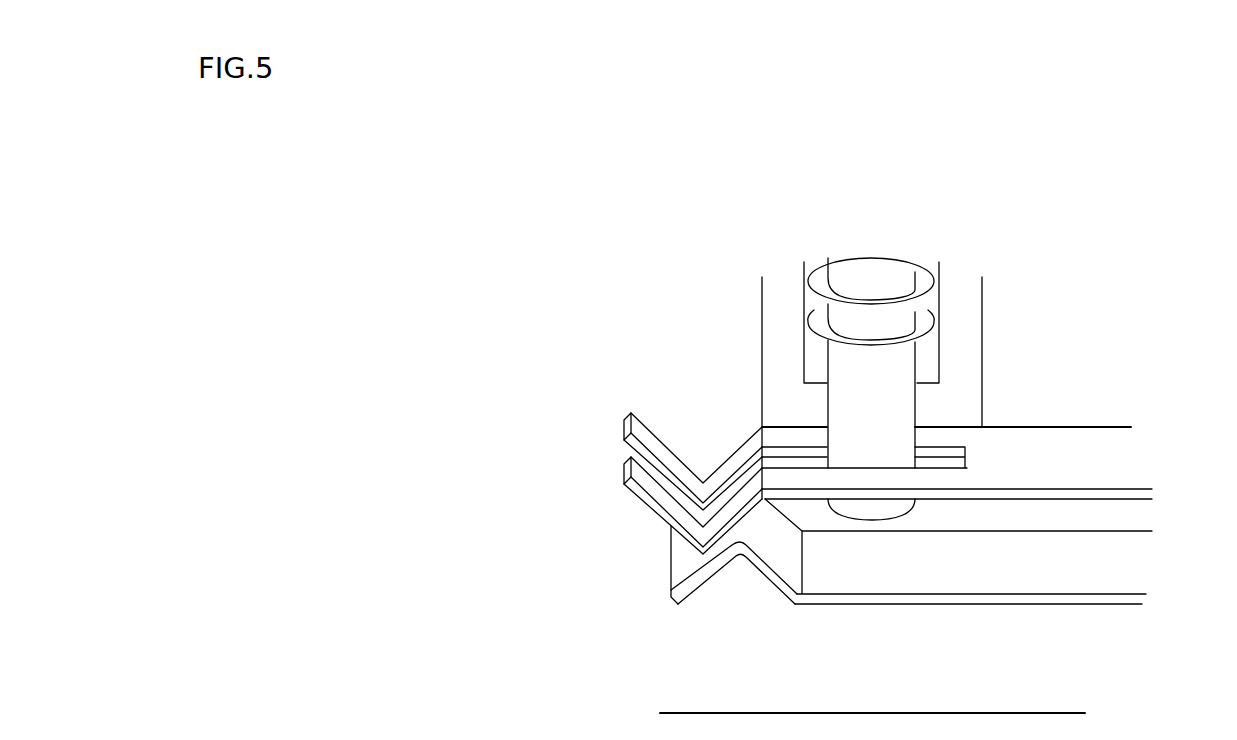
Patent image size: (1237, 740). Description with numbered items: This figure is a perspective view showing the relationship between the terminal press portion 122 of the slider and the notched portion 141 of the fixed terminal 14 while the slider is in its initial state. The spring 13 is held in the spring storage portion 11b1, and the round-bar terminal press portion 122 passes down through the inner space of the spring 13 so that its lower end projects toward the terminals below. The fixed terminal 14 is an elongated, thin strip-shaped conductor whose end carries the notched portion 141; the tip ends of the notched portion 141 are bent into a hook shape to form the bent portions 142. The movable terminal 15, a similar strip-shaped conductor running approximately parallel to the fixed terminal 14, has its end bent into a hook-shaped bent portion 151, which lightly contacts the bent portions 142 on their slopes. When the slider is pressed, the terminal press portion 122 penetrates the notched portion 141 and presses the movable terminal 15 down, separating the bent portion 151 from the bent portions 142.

The spring storage portion 11b1 is at (768, 352).
The spring 13 is at (920, 290).
The terminal press portion 122 is at (910, 360).
The fixed terminal 14 is at (1131, 454).
The notched portion 141 is at (627, 451).
The bent portions 142 is at (695, 552).
The bent portion 151 is at (737, 548).
The movable terminal 15 is at (1120, 598).